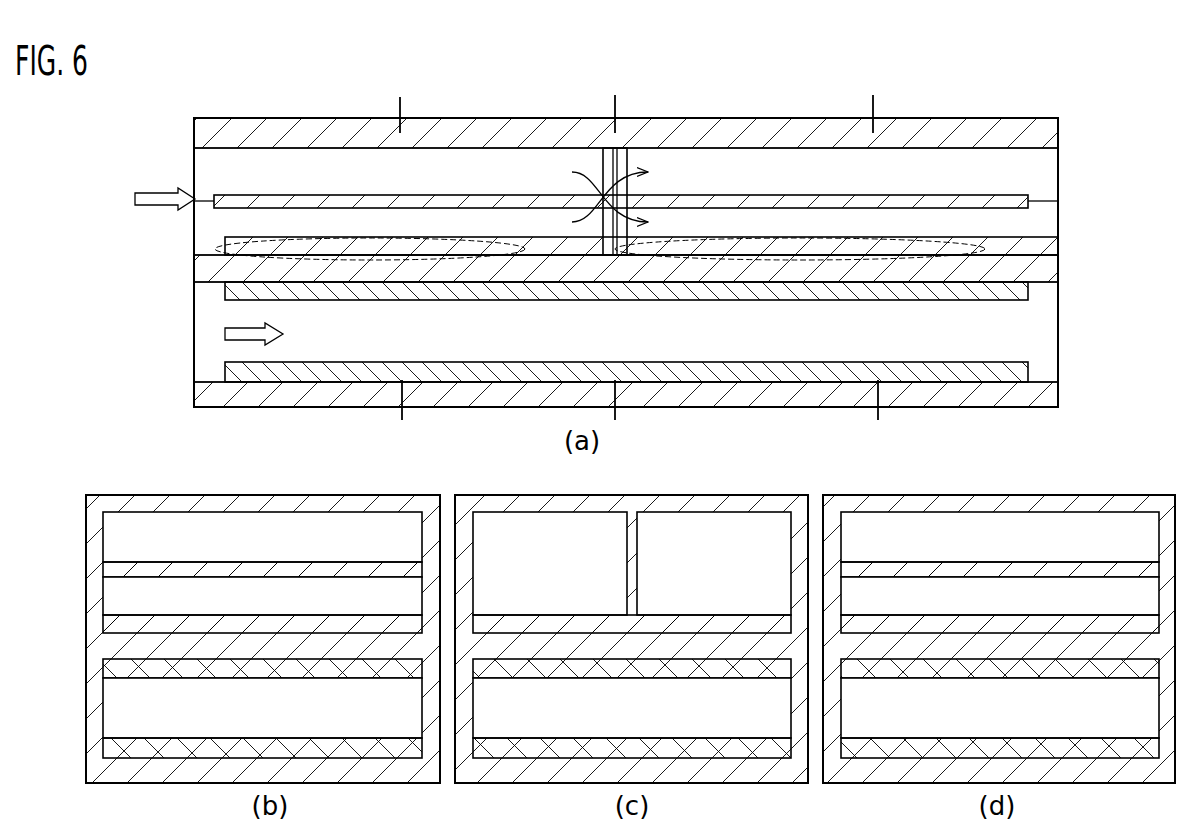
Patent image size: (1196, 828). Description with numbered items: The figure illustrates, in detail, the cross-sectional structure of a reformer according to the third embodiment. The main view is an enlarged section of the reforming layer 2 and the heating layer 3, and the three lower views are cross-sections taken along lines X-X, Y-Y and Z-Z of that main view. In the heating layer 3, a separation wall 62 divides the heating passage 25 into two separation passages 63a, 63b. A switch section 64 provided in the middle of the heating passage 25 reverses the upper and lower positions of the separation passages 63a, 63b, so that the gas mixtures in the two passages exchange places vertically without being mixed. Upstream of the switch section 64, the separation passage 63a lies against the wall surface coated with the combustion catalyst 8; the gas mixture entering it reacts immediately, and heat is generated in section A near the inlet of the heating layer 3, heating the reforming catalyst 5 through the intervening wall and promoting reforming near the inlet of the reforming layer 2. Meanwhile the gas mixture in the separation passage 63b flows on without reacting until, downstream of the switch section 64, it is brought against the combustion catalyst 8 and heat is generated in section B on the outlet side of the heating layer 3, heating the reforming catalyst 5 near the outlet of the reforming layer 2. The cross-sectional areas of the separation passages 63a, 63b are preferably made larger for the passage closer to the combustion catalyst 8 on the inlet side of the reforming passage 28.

The reforming layer 2 is at (1055, 340).
The heating layer 3 is at (957, 165).
The reforming catalyst 5 is at (1030, 288).
The combustion catalyst 8 is at (1058, 240).
The heating passage 25 is at (150, 181).
The reforming passage 28 is at (175, 335).
The separation wall 62 is at (500, 195).
The separation passage 63a is at (230, 231).
The separation passage 63b is at (230, 163).
The switch section 64 is at (626, 178).
The section A is at (440, 237).
The section B is at (810, 237).
The cross-section line X- X is at (401, 258).
The cross-section line Y- Y is at (614, 258).
The cross-section line Z- Z is at (875, 258).